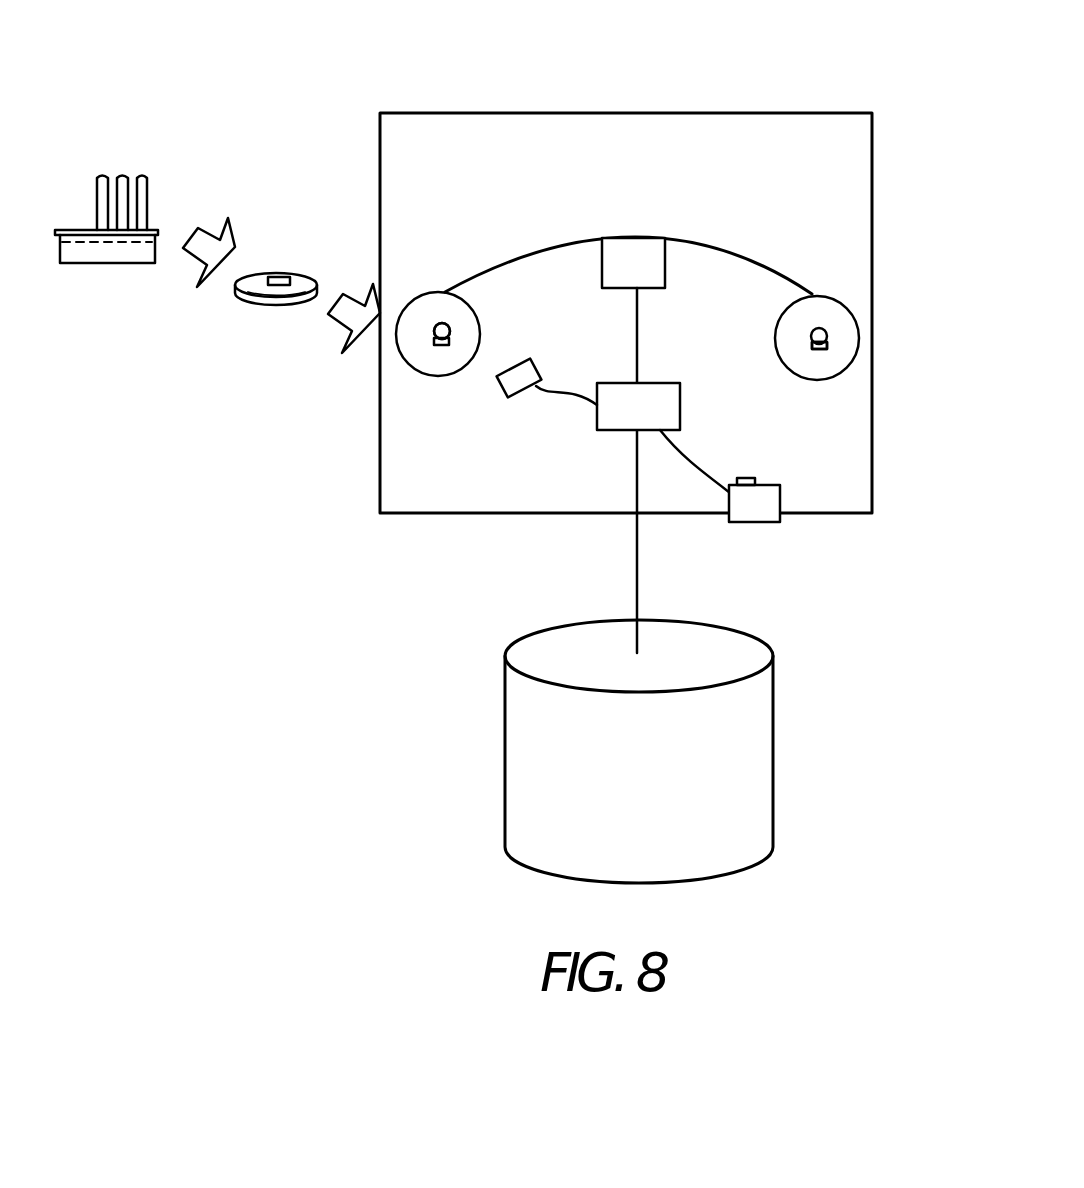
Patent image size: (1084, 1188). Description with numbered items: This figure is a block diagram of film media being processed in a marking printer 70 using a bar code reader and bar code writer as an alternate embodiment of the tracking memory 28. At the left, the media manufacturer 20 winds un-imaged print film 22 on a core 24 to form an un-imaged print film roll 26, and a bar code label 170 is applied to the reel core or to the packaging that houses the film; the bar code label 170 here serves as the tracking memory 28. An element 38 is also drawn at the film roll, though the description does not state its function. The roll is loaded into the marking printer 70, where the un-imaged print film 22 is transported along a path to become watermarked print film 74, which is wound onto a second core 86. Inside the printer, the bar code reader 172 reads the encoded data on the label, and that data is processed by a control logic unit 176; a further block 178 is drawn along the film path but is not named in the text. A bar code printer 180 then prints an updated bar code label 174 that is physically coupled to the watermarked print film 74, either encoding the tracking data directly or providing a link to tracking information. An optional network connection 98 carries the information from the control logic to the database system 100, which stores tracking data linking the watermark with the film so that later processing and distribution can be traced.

The media manufacturer 20 is at (125, 265).
The un-imaged print film 22 is at (258, 271).
The bar code label 170 is at (286, 280).
The tracking memory 28 is at (296, 282).
The disc lower surface 38 is at (246, 300).
The un-imaged print film roll 26 is at (277, 308).
The core 24 is at (437, 325).
The watermarked print film 74 is at (762, 262).
The controller 178 is at (654, 289).
The control logic unit 176 is at (681, 393).
The bar code reader 172 is at (528, 362).
The bar code printer 180 is at (770, 488).
The second core 86 is at (828, 337).
The updated bar code label 174 is at (822, 352).
The network connection 98 is at (638, 560).
The database system 100 is at (773, 732).
The marking printer 70 is at (609, 112).